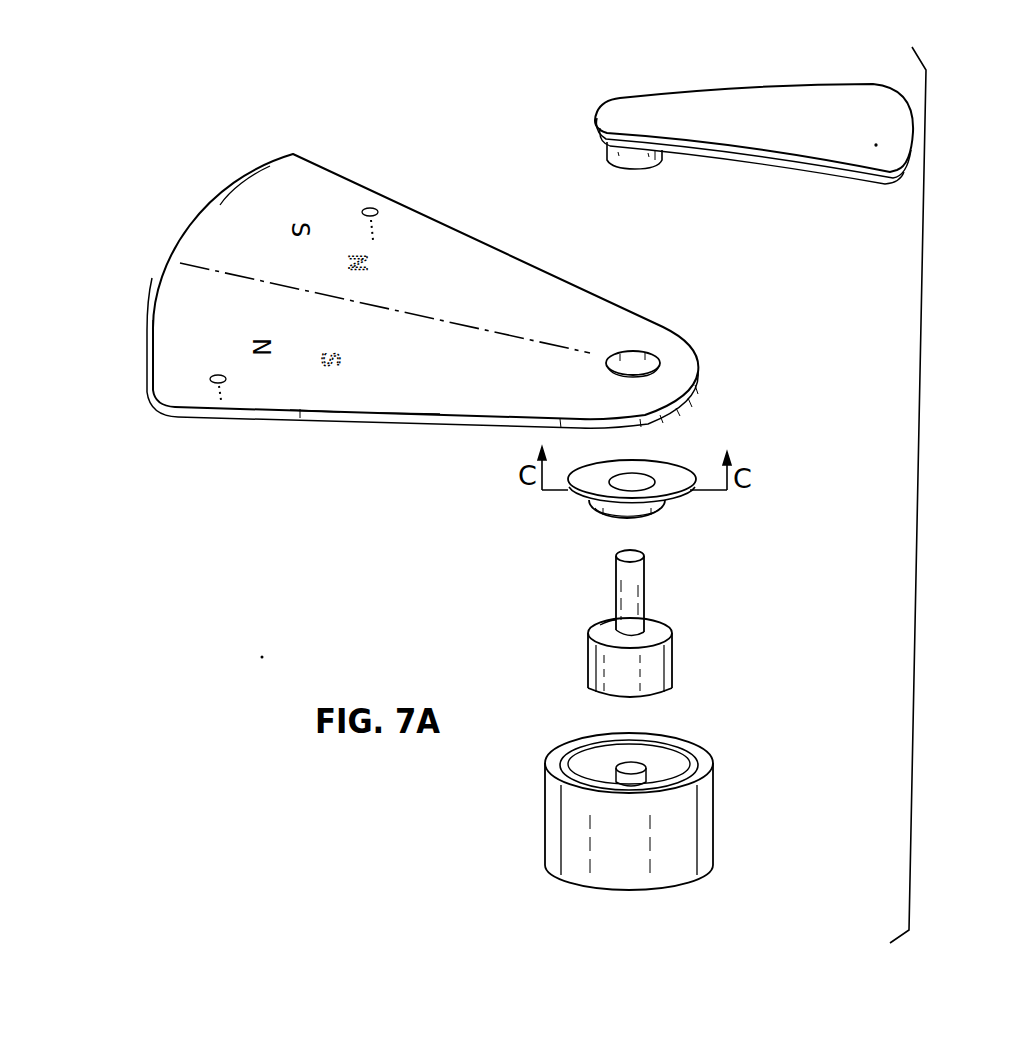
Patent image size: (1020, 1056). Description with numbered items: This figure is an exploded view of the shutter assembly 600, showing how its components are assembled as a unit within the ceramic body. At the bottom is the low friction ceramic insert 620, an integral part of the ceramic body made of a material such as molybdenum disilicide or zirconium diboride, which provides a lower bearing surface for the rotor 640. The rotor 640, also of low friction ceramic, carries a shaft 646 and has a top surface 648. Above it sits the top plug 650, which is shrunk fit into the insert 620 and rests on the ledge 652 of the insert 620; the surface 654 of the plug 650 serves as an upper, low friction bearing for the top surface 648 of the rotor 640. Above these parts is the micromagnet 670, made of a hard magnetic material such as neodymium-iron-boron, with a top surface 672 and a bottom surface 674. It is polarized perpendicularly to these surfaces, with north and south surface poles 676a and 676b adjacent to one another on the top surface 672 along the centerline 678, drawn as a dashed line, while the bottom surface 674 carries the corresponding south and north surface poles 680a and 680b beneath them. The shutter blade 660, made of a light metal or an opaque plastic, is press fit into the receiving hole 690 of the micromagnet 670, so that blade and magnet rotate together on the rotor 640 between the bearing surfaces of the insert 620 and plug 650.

The shutter assembly 600 is at (298, 104).
The low friction ceramic insert 620 is at (560, 805).
The rotor 640 is at (665, 658).
The shaft 646 is at (640, 580).
The top surface of rotor 648 is at (598, 628).
The top plug 650 is at (585, 498).
The ledge 652 is at (695, 750).
The surface of plug 654 is at (602, 514).
The shutter blade 660 is at (667, 107).
The micromagnet 670 is at (192, 414).
The top surface 672 is at (312, 400).
The bottom surface 674 is at (401, 432).
The north surface pole 676a is at (168, 320).
The south surface pole 676b is at (235, 200).
The centerline 678 is at (357, 301).
The south surface pole 680a is at (217, 373).
The north surface pole 680b is at (369, 207).
The receiving hole 690 is at (637, 351).